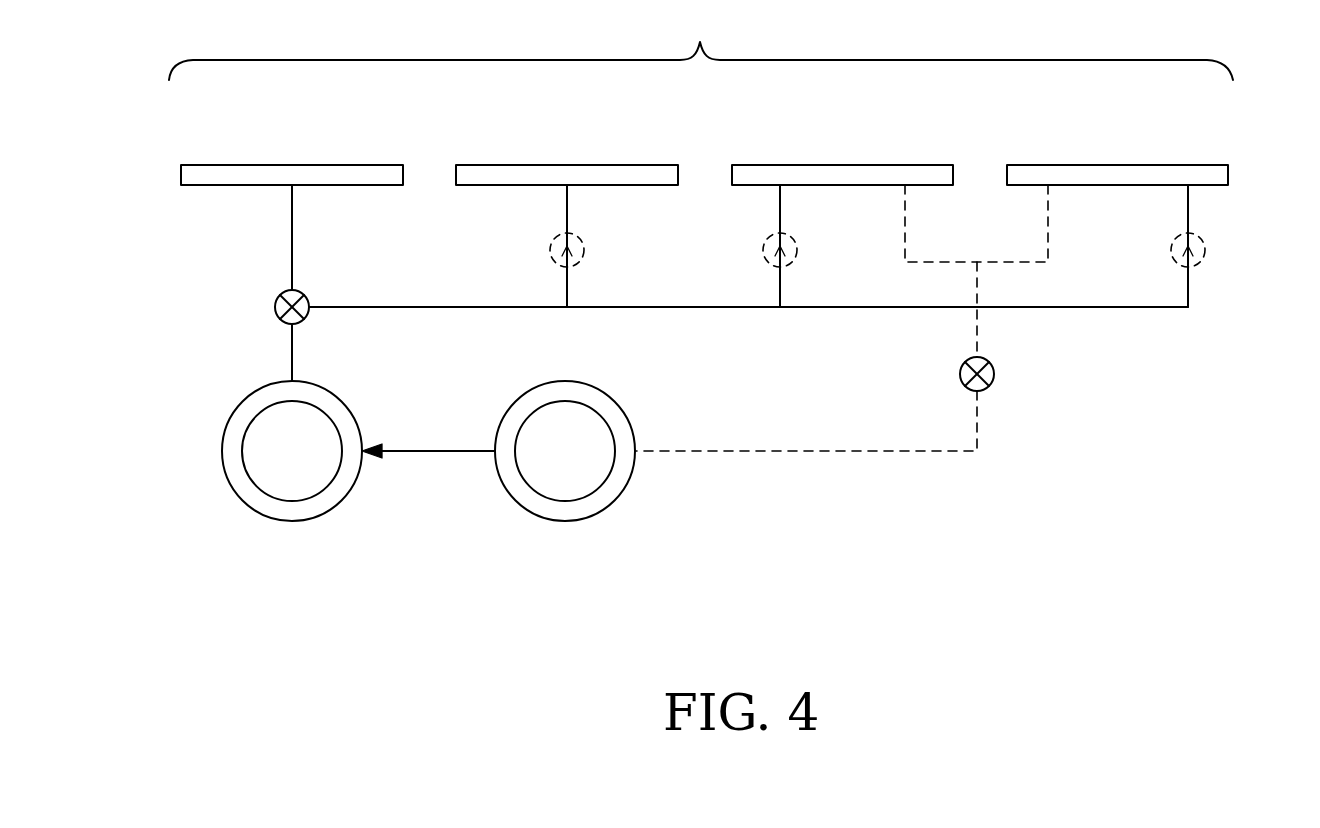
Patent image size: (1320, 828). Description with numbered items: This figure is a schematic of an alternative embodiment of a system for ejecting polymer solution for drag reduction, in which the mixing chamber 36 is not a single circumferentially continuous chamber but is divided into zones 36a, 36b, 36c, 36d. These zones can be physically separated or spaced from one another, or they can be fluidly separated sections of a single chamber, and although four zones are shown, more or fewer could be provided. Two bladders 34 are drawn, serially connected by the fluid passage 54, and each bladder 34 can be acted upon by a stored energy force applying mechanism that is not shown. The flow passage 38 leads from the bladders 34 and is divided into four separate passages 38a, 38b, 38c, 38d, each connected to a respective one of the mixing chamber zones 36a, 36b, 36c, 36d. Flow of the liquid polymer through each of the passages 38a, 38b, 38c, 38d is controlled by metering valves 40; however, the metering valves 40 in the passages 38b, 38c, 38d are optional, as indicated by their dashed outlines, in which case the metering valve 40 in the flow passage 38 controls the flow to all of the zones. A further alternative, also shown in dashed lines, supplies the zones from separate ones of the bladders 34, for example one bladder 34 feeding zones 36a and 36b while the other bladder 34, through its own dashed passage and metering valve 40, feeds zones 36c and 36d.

The mixing chamber 36 is at (701, 46).
The mixing chamber zone 36a is at (288, 163).
The mixing chamber zone 36b is at (567, 163).
The mixing chamber zone 36c is at (780, 163).
The mixing chamber zone 36d is at (1118, 163).
The flow passage 38 is at (293, 348).
The flow passage 38a is at (293, 232).
The flow passage 38b is at (568, 214).
The flow passage 38c is at (781, 214).
The flow passage 38d is at (1189, 214).
The metering valve 40 is at (300, 297).
The bladder 34 is at (297, 521).
The fluid passage 54 is at (430, 448).